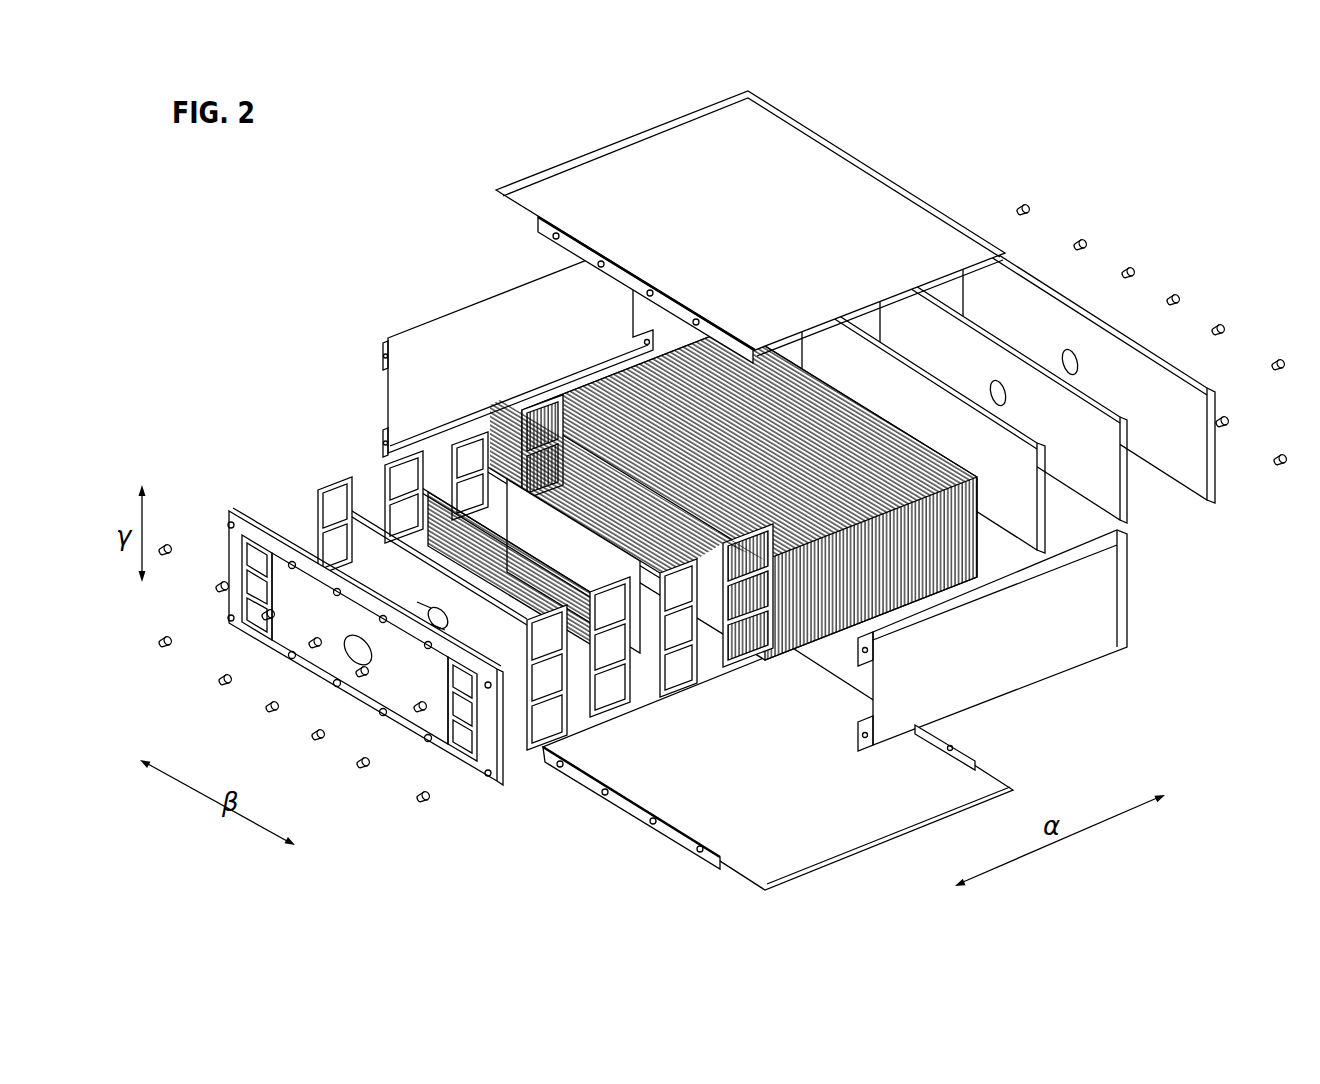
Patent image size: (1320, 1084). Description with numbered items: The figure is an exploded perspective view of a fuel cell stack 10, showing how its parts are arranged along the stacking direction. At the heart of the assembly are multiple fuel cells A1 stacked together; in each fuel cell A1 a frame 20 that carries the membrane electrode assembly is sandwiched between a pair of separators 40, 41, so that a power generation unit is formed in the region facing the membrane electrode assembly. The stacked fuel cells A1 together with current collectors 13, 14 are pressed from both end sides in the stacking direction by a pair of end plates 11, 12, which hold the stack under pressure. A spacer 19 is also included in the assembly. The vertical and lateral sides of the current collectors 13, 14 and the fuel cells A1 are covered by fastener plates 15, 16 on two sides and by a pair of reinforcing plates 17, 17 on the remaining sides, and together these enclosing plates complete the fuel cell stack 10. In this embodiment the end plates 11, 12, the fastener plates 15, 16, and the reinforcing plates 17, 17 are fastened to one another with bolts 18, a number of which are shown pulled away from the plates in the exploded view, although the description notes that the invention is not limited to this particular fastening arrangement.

The fuel cell stack 10 is at (385, 247).
The end plate 11 is at (234, 512).
The end plate 12 is at (1130, 340).
The current collector 13 is at (318, 502).
The current collector 14 is at (1055, 520).
The fastener plate 15 is at (601, 150).
The fastener plate 16 is at (903, 833).
The reinforcing plate 17 is at (453, 312).
The bolt 18 is at (1080, 240).
The spacer 19 is at (1127, 500).
The frame 20 is at (452, 475).
The separator 40 is at (383, 488).
The separator 41 is at (520, 440).
The fuel cell A1 is at (697, 702).